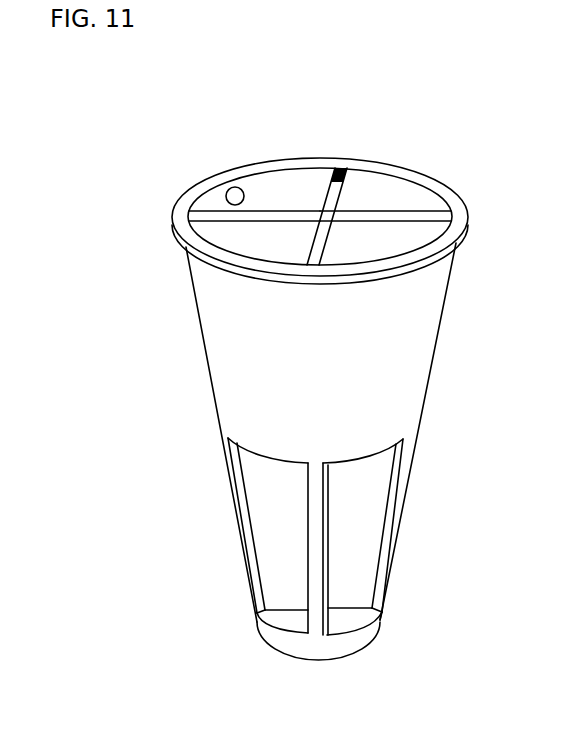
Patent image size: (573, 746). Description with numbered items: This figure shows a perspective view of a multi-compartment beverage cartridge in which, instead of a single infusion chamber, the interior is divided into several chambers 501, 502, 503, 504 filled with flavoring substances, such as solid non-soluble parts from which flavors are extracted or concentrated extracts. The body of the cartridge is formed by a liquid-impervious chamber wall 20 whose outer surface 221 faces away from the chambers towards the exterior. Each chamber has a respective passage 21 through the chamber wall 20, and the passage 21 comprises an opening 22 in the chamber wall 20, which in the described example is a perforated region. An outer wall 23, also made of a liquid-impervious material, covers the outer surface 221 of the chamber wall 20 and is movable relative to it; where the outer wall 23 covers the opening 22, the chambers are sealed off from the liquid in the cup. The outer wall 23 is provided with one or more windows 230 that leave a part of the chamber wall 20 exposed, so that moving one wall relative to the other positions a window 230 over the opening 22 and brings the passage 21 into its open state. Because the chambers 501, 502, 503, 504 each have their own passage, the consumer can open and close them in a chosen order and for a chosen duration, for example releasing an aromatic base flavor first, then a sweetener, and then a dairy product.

The chamber wall 20 is at (215, 300).
The passage 21 is at (392, 578).
The opening 22 is at (392, 501).
The outer wall 23 is at (250, 497).
The outer surface 221 is at (262, 350).
The window 230 is at (300, 600).
The chamber 501 is at (238, 228).
The chamber 502 is at (288, 183).
The chamber 503 is at (348, 228).
The chamber 504 is at (399, 183).